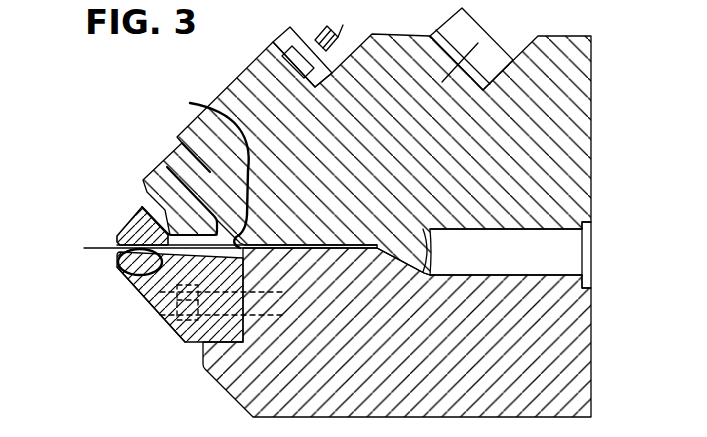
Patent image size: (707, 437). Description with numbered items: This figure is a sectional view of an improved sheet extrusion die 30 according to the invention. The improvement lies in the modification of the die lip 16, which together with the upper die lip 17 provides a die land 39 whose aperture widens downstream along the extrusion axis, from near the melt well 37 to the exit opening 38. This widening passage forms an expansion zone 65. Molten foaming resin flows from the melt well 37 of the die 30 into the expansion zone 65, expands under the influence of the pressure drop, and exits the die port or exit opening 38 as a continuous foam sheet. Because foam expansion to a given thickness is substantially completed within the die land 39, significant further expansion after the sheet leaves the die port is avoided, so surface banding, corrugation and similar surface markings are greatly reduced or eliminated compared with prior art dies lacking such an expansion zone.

The die lip 16 is at (145, 299).
The upper die lip 17 is at (133, 216).
The die 30 is at (170, 334).
The melt well 37 is at (203, 110).
The exit opening 38 is at (117, 233).
The die land 39 is at (135, 273).
The expansion zone 65 is at (216, 248).